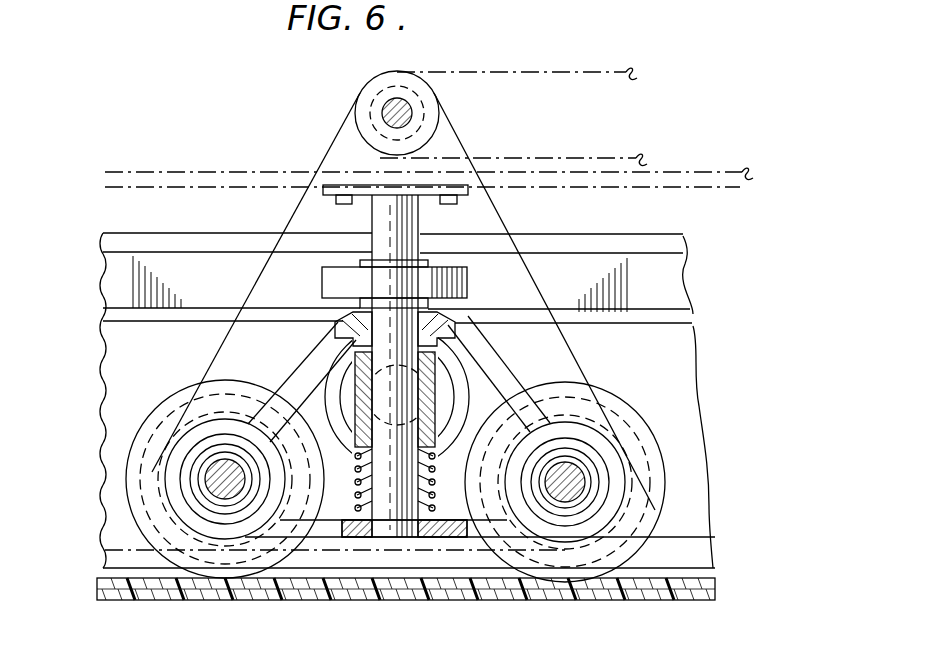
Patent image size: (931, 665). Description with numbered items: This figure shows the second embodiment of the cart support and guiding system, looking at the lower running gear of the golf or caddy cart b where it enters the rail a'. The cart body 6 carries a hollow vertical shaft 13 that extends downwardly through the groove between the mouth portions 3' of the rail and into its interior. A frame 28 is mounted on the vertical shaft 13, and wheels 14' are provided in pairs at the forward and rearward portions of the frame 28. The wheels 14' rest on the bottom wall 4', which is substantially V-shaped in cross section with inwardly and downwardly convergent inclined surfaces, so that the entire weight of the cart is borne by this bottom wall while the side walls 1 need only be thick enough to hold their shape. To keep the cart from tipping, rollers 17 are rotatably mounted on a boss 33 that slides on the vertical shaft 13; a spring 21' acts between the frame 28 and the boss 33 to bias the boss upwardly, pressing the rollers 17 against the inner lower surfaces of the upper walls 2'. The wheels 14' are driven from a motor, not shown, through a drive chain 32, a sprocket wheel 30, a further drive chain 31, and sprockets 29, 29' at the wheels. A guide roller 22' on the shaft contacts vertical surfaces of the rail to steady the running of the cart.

The side walls 1 is at (700, 556).
The upper walls 2' is at (406, 400).
The mouth portions 3' is at (376, 278).
The bottom wall 4' is at (413, 610).
The body 6 is at (663, 172).
The vertical shaft 13 is at (414, 224).
The wheels 14' is at (370, 481).
The rollers 17 is at (303, 387).
The spring 21' is at (412, 479).
The gear 22' is at (426, 284).
The frame 28 is at (490, 374).
The sprocket 29 is at (167, 479).
The sprocket 29' is at (612, 487).
The sprocket wheel 30 is at (376, 82).
The drive chain 31 is at (317, 167).
The drive chain 32 is at (594, 70).
The boss 33 is at (320, 351).
The rail a' is at (690, 278).
The golf or caddy cart b is at (697, 168).